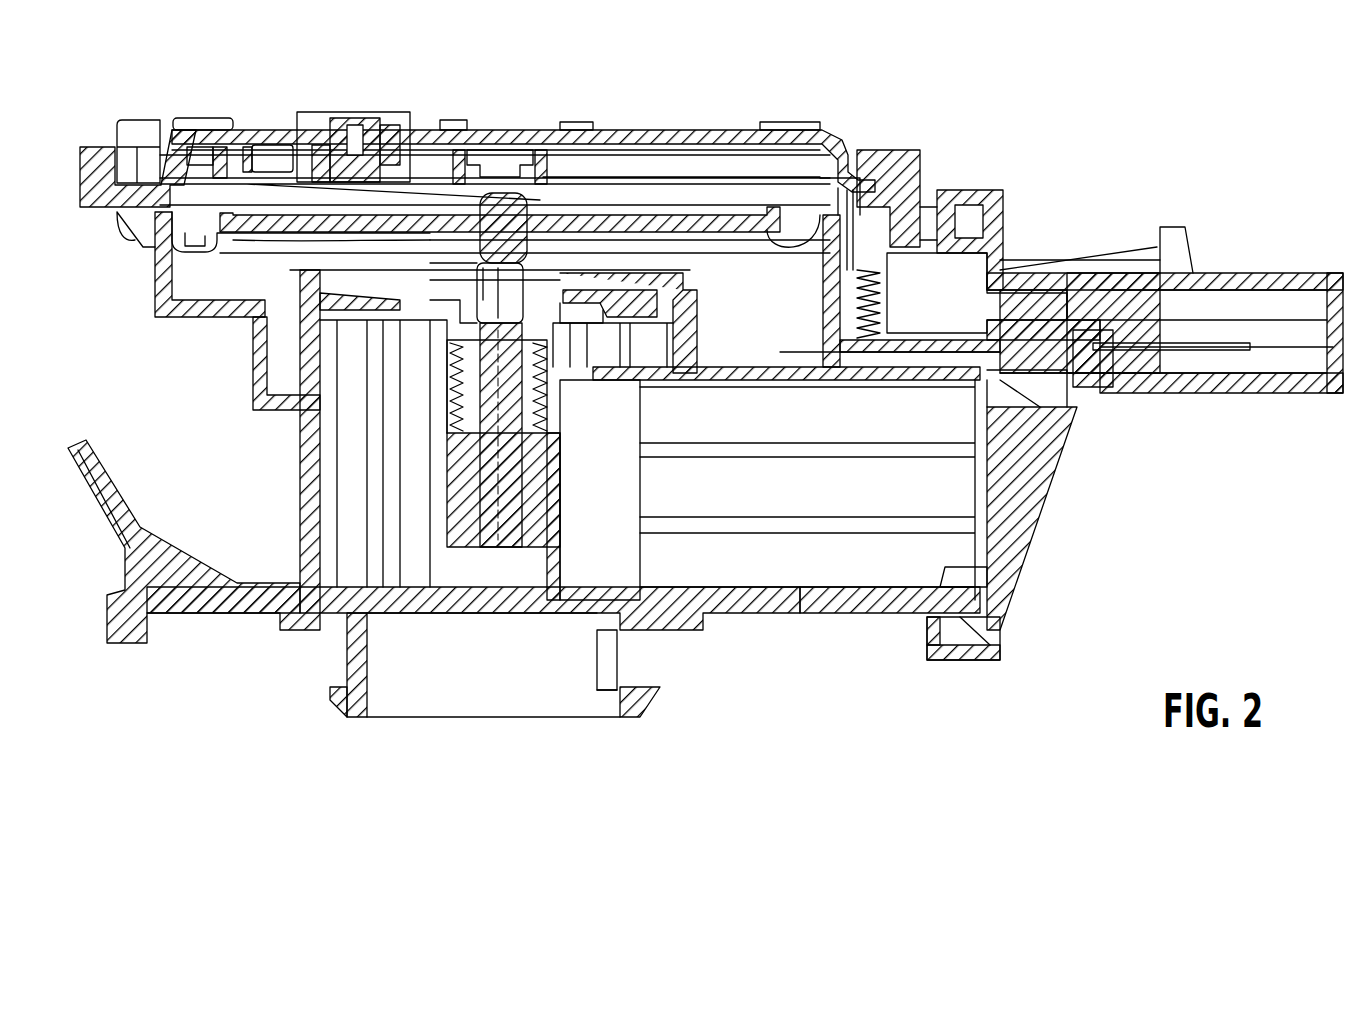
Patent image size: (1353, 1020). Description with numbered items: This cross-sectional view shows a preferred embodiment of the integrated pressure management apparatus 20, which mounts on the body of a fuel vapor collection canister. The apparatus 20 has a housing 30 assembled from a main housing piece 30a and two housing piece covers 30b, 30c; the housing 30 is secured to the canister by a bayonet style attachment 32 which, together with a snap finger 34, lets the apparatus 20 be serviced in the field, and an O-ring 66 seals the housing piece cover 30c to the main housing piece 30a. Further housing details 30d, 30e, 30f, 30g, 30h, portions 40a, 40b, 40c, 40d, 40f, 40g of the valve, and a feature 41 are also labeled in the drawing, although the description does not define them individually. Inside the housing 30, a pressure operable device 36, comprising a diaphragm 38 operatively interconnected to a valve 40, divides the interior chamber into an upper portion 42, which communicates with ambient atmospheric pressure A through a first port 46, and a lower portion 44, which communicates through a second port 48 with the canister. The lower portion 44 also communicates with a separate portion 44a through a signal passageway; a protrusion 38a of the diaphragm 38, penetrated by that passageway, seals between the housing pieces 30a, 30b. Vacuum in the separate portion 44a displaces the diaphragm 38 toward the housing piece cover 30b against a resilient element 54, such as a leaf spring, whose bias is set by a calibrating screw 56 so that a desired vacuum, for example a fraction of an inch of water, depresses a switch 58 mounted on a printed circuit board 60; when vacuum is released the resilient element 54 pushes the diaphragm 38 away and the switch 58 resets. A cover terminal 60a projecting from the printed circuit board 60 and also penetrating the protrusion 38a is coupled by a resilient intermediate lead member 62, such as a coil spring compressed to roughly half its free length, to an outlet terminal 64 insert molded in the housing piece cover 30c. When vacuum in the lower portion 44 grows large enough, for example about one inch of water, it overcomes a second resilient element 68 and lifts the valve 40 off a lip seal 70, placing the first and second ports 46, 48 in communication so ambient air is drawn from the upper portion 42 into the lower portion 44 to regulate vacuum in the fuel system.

The integrated pressure management apparatus 20 is at (1162, 170).
The housing 30 is at (903, 103).
The main housing piece 30a is at (515, 550).
The housing piece cover 30b is at (890, 170).
The housing piece cover 30c is at (1007, 240).
The plunger 30d is at (500, 542).
The housing cavity 30e is at (560, 540).
The housing spring seat 30f is at (563, 380).
The housing bore 30g is at (450, 383).
The housing passage 30h is at (457, 420).
The bayonet style attachment 32 is at (337, 700).
The snap finger 34 is at (127, 560).
The pressure operable device 36 is at (623, 83).
The diaphragm 38 is at (590, 215).
The protrusion 38a is at (897, 253).
The valve 40 is at (563, 285).
The valve stem 40a is at (543, 240).
The valve seat 40b is at (468, 300).
The retainer 40c is at (313, 275).
The wall portion 40d is at (293, 382).
The valve guide 40f is at (483, 272).
The diaphragm plate 40g is at (547, 282).
The diaphragm bead 41 is at (345, 247).
The upper portion 42 is at (157, 275).
The lower portion 44 is at (403, 603).
The separate portion 44a is at (195, 190).
The first port 46 is at (1337, 270).
The second port 48 is at (617, 720).
The resilient element 54 is at (292, 183).
The calibrating screw 56 is at (352, 150).
The switch 58 is at (500, 152).
The printed circuit board 60 is at (735, 138).
The cover terminal 60a is at (823, 268).
The intermediate lead member 62 is at (856, 300).
The outlet terminal 64 is at (1040, 415).
The O-ring 66 is at (958, 657).
The second resilient element 68 is at (550, 405).
The lip seal 70 is at (450, 340).
The ambient atmospheric pressure A is at (553, 412).